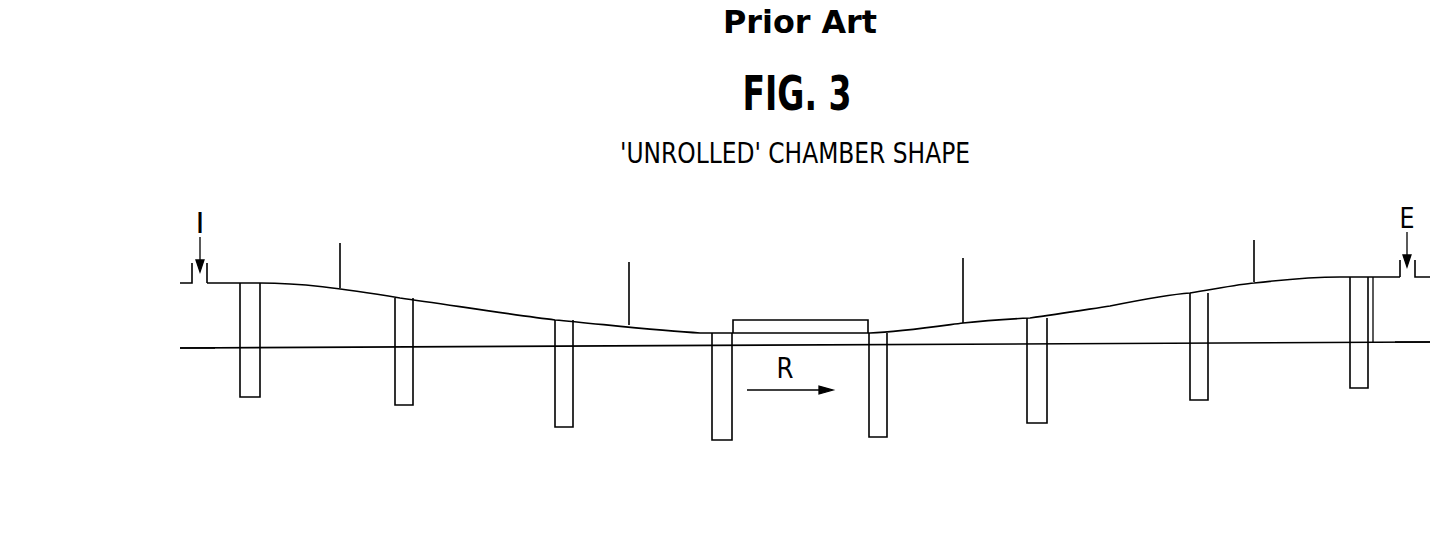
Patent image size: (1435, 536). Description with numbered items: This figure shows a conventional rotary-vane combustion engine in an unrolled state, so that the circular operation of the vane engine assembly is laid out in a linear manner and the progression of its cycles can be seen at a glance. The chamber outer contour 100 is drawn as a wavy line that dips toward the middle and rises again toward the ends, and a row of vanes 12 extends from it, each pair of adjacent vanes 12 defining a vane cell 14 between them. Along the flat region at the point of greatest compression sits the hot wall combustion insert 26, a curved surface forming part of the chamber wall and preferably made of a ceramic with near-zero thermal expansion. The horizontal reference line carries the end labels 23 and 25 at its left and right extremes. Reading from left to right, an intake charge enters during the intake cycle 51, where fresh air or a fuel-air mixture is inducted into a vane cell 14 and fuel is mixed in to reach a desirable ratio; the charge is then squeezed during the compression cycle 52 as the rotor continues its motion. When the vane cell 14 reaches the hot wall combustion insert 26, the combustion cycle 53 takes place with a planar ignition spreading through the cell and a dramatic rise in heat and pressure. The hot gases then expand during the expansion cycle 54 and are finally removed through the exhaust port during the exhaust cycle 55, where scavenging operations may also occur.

The vane 12 is at (408, 398).
The vane cell 14 is at (1120, 332).
The rotor shaft end 23 is at (192, 352).
The rotor shaft end 25 is at (1413, 330).
The hot wall combustion insert 26 is at (828, 320).
The intake cycle 51 is at (285, 240).
The compression cycle 52 is at (452, 227).
The combustion cycle 53 is at (797, 232).
The expansion cycle 54 is at (1058, 215).
The exhaust cycle 55 is at (1332, 220).
The chamber wall contour 100 is at (1165, 295).